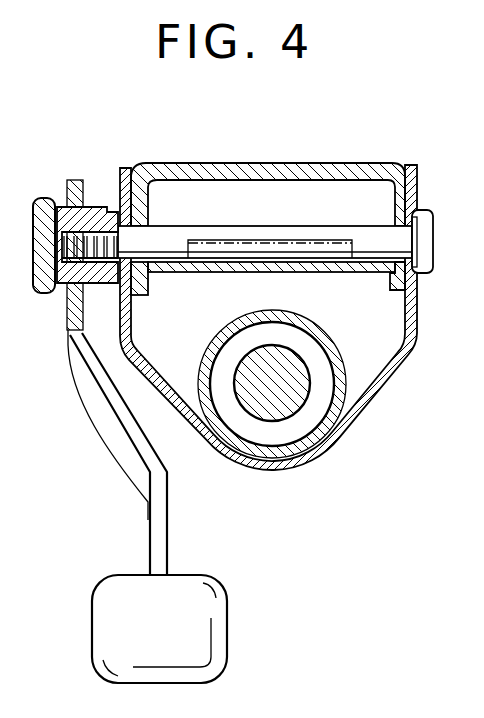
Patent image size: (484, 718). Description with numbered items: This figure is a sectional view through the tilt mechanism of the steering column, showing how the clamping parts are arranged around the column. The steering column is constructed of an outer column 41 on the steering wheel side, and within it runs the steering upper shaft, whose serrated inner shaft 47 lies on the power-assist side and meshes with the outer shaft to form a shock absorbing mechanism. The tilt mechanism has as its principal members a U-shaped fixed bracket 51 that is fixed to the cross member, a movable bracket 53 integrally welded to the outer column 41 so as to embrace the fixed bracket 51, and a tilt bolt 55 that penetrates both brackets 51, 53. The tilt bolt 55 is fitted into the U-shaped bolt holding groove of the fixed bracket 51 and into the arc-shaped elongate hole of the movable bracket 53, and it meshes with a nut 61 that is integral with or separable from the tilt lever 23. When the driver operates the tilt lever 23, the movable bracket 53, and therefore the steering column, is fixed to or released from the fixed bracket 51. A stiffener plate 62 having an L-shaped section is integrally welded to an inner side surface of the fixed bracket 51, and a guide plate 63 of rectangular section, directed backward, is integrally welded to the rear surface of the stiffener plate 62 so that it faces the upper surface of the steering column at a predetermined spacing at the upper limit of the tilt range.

The tilt lever 23 is at (157, 517).
The outer column 41 is at (237, 442).
The inner shaft 47 is at (292, 402).
The fixed bracket 51 is at (290, 163).
The movable bracket 53 is at (393, 358).
The tilt bolt 55 is at (329, 228).
The nut 61 is at (98, 207).
The stiffener plate 62 is at (357, 274).
The guide plate 63 is at (210, 240).